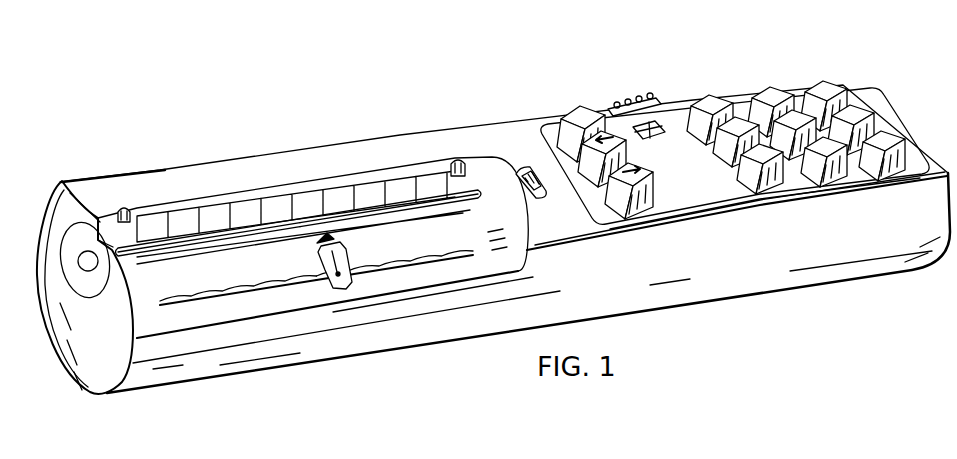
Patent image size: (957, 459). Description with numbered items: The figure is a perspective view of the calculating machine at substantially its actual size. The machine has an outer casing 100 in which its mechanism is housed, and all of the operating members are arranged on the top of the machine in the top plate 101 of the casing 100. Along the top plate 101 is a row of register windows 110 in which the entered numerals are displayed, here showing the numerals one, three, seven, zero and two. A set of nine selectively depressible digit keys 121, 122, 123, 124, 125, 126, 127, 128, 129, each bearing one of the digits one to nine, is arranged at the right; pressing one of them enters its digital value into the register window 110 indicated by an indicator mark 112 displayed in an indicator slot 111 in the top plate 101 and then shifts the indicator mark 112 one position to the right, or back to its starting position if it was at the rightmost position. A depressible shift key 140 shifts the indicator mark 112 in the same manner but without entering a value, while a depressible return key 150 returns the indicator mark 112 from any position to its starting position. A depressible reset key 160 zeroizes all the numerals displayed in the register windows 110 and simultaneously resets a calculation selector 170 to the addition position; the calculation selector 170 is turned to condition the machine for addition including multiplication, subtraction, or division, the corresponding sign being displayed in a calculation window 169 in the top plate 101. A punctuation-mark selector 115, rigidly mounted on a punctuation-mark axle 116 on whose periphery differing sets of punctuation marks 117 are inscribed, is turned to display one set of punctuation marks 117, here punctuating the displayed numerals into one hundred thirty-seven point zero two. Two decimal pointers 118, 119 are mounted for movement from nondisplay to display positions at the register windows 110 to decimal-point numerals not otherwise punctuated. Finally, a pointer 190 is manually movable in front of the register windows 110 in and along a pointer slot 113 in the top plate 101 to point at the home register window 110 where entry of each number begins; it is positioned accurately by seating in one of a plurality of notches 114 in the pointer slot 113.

The outer casing 100 is at (700, 267).
The top plate 101 is at (290, 163).
The register windows 110 is at (147, 222).
The indicator slot 111 is at (267, 246).
The indicator mark 112 is at (318, 242).
The pointer slot 113 is at (422, 257).
The notches 114 is at (278, 290).
The punctuation-mark selector 115 is at (521, 177).
The punctuation-mark axle 116 is at (480, 199).
The punctuation marks 117 is at (212, 240).
The decimal pointer 118 is at (124, 206).
The decimal pointer 119 is at (462, 160).
The digit key 121 is at (763, 176).
The digit key 122 is at (829, 175).
The digit key 123 is at (886, 171).
The digit key 124 is at (737, 153).
The digit key 125 is at (801, 148).
The digit key 126 is at (860, 128).
The digit key 127 is at (703, 93).
The digit key 128 is at (765, 85).
The digit key 129 is at (817, 77).
The shift key 140 is at (635, 198).
The return key 150 is at (588, 166).
The reset key 160 is at (577, 111).
The calculation window 169 is at (653, 135).
The calculation selector 170 is at (630, 100).
The pointer 190 is at (348, 284).